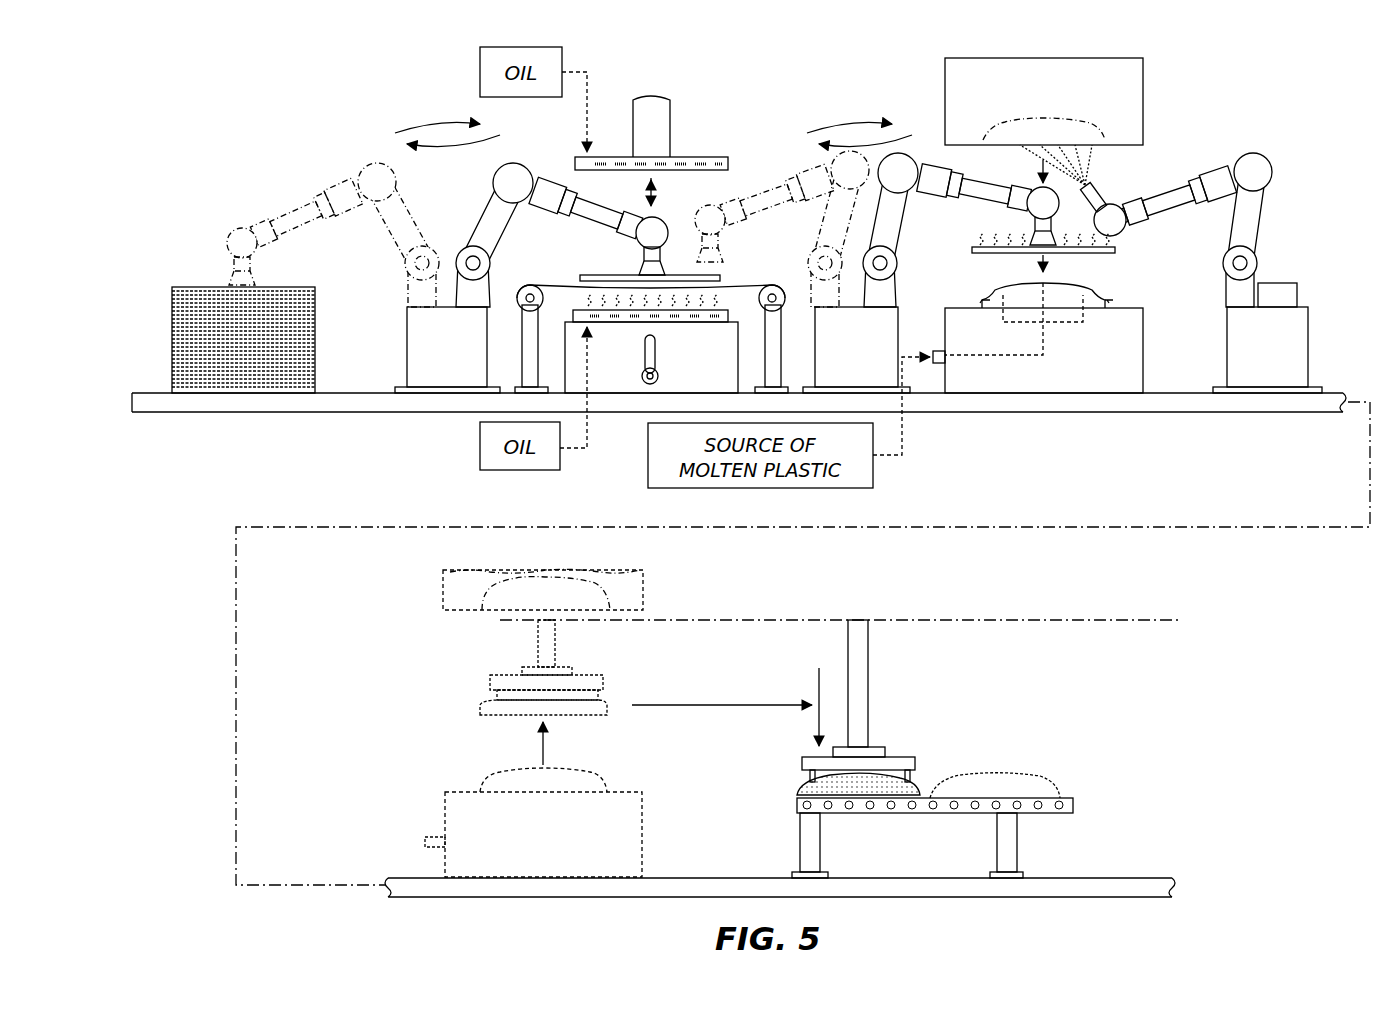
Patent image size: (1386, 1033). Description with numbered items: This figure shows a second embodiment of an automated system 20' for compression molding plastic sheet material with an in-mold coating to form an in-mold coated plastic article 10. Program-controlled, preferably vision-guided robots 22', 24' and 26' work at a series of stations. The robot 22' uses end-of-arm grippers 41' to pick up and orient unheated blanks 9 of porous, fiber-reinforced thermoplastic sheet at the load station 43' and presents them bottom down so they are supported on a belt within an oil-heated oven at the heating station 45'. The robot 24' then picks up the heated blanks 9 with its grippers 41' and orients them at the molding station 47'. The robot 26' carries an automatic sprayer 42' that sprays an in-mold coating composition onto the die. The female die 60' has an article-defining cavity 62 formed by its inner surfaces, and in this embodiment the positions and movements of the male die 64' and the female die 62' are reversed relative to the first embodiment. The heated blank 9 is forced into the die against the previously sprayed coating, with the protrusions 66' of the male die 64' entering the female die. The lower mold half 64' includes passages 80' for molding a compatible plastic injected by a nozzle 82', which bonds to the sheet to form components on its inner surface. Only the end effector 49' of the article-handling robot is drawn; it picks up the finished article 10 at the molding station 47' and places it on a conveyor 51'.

The system 20' is at (751, 465).
The load station 43' is at (397, 278).
The blank 9 is at (197, 287).
The robot 22' is at (562, 235).
The gripper 41' is at (847, 230).
The heating station 45' is at (678, 139).
The robot 24' is at (877, 249).
The robot 26' is at (1208, 273).
The molding station 47' is at (833, 318).
The female die 60' is at (833, 331).
The article-defining cavity 62 is at (1043, 105).
The automatic sprayer 42' is at (1100, 178).
The male die 64' is at (828, 568).
The protrusion 66' is at (1056, 283).
The passage 80' is at (1025, 337).
The nozzle 82' is at (695, 599).
The female die 62' is at (545, 573).
The in-mold coated plastic article 10 is at (576, 722).
The end effector 49' is at (883, 701).
The conveyor 51' is at (951, 838).